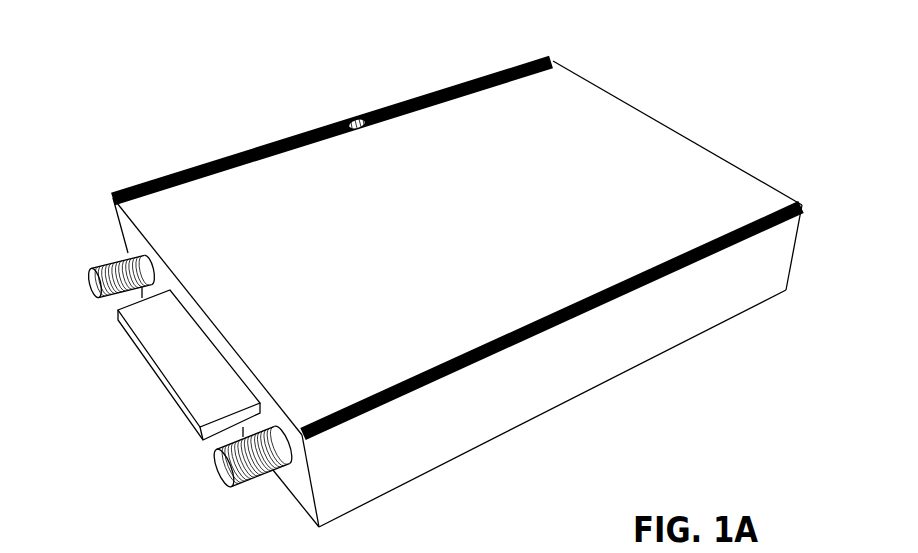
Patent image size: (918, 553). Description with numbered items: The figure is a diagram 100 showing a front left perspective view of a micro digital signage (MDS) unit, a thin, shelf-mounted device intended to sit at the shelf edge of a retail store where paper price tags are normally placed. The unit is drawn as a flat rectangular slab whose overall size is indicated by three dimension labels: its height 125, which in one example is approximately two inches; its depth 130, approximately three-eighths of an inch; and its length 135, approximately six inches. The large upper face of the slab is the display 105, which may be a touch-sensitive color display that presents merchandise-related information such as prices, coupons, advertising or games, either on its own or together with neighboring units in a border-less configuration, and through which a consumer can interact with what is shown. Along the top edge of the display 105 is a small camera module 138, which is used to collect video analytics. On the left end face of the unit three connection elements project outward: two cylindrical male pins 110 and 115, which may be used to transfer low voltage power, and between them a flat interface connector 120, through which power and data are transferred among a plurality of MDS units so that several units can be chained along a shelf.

The diagram 100 is at (190, 96).
The display 105 is at (430, 222).
The male pin 110 is at (88, 291).
The male pin 115 is at (212, 474).
The interface connector 120 is at (137, 358).
The height 125 is at (672, 131).
The depth 130 is at (832, 258).
The length 135 is at (562, 407).
The camera module 138 is at (354, 121).